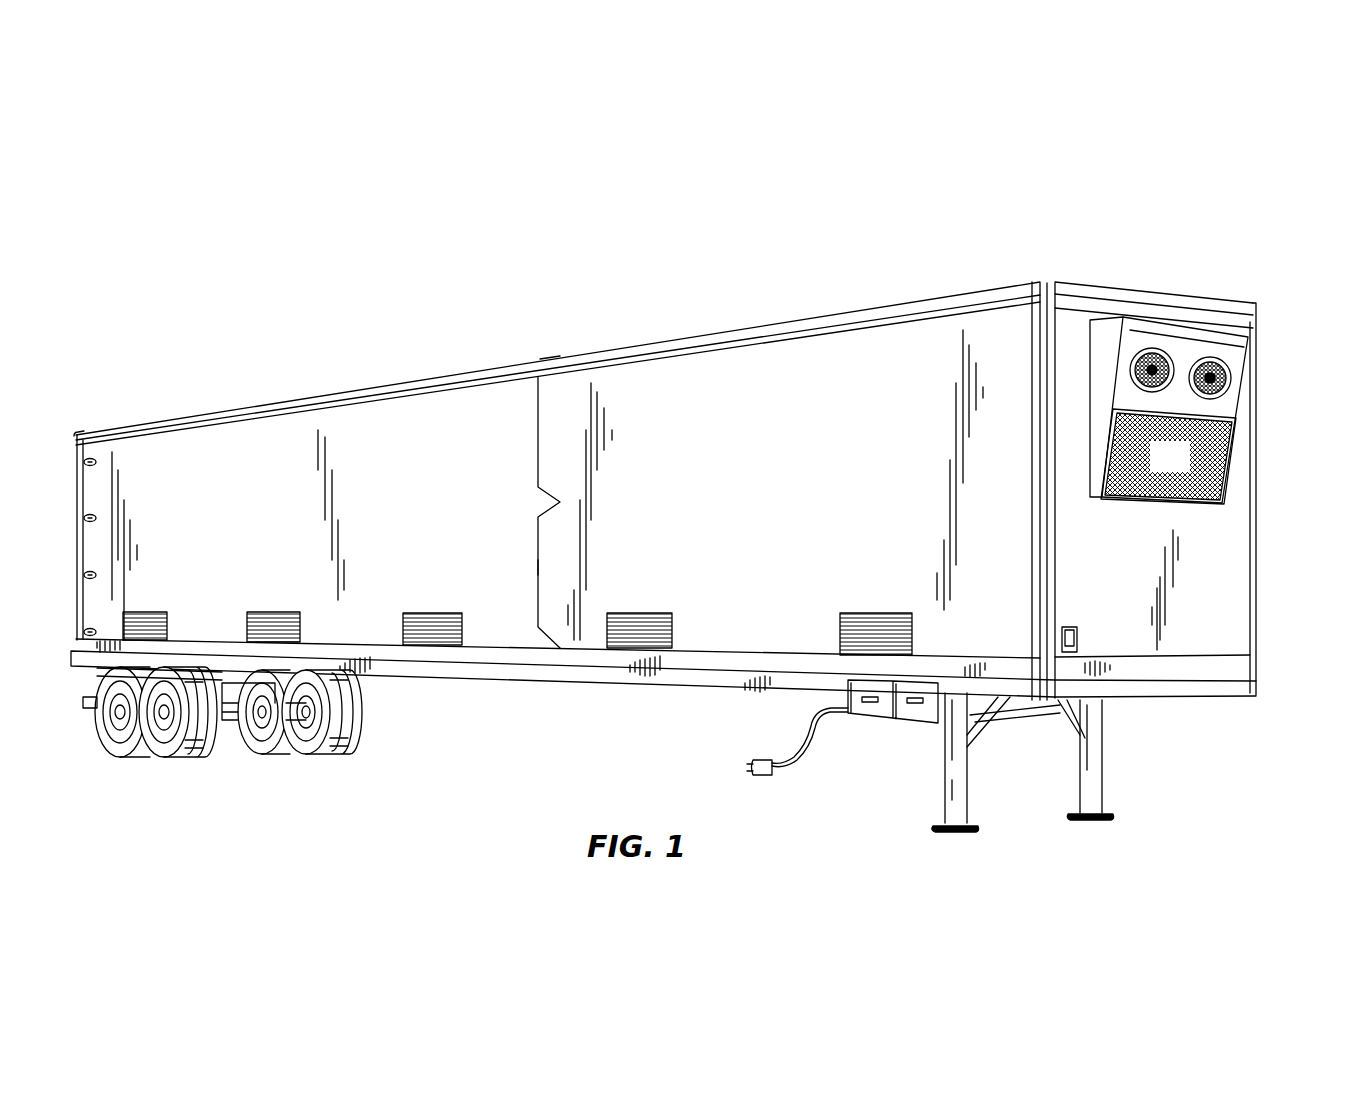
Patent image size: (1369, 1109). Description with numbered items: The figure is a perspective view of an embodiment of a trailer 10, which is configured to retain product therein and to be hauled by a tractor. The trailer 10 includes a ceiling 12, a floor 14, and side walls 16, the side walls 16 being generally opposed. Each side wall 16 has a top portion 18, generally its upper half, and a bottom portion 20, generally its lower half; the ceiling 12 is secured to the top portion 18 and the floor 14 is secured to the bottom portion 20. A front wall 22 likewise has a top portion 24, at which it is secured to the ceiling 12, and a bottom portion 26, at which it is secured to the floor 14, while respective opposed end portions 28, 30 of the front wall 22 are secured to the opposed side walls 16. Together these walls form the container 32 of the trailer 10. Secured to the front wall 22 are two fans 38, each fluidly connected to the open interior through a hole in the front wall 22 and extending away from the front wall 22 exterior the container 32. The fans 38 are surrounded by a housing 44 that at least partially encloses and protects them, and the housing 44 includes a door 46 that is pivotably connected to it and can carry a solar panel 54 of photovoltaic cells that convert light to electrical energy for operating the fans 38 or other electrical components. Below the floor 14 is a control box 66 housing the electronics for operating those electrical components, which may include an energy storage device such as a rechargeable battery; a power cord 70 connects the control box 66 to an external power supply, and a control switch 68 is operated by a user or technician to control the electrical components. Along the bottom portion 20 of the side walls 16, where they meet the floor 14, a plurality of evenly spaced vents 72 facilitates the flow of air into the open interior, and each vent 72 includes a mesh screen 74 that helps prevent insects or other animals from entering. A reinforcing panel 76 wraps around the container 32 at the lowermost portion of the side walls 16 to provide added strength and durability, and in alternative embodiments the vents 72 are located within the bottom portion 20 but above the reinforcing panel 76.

The trailer 10 is at (527, 352).
The ceiling 12 is at (935, 290).
The floor 14 is at (578, 682).
The side walls 16 is at (757, 486).
The top portion 18 is at (538, 422).
The bottom portion 20 is at (538, 562).
The front wall 22 is at (1238, 466).
The top portion 24 is at (1267, 322).
The bottom portion 26 is at (1267, 512).
The end portion 28 is at (1160, 297).
The end portion 30 is at (1253, 311).
The container 32 is at (218, 400).
The fan 38 is at (1130, 357).
The housing 44 is at (1098, 398).
The door 46 is at (1223, 410).
The solar panel 54 is at (1182, 470).
The control box 66 is at (893, 722).
The control switch 68 is at (1067, 627).
The power cord 70 is at (800, 762).
The vents 72 is at (158, 625).
The mesh screen 74 is at (140, 605).
The reinforcing panel 76 is at (113, 640).